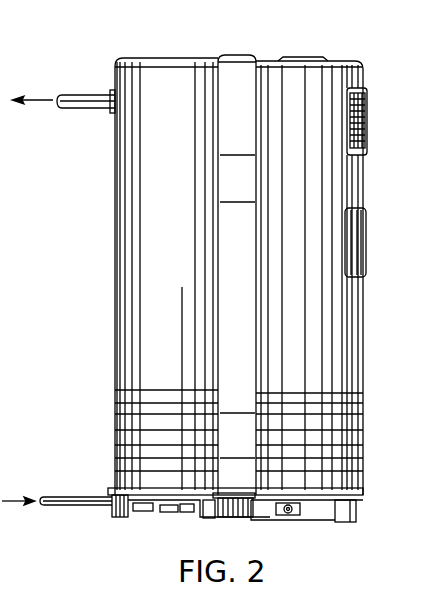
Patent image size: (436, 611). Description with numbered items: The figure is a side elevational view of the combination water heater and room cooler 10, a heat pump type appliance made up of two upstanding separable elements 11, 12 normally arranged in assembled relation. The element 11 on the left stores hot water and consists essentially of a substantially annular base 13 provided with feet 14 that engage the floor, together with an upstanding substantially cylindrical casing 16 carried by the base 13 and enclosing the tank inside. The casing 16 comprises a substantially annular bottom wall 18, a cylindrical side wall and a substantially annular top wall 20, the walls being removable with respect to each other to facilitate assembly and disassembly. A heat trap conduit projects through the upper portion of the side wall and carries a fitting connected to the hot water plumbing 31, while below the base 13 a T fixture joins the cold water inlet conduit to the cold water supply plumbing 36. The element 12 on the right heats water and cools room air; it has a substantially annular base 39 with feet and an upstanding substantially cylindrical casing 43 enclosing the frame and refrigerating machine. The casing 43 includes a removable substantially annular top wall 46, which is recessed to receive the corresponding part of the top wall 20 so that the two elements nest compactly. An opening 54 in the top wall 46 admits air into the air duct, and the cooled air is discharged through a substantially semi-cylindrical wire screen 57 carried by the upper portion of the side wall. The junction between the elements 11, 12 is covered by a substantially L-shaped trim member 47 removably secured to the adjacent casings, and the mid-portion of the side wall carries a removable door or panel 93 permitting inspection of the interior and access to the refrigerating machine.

The combination water heater and room cooler 10 is at (249, 43).
The element 11 is at (172, 258).
The element 12 is at (298, 261).
The base 13 is at (190, 507).
The feet 14 is at (253, 503).
The casing 16 is at (113, 326).
The bottom wall 18 is at (175, 488).
The top wall 20 is at (168, 63).
The hot water plumbing 31 is at (98, 97).
The cold water supply plumbing 36 is at (77, 497).
The base 39 is at (326, 505).
The casing 43 is at (364, 351).
The top wall 46 is at (340, 62).
The trim member 47 is at (243, 130).
The opening 54 is at (300, 58).
The wire screen 57 is at (368, 92).
The door or panel 93 is at (366, 245).